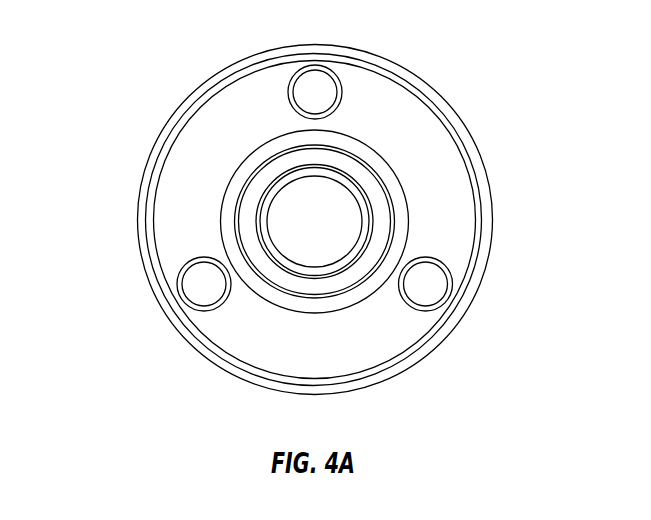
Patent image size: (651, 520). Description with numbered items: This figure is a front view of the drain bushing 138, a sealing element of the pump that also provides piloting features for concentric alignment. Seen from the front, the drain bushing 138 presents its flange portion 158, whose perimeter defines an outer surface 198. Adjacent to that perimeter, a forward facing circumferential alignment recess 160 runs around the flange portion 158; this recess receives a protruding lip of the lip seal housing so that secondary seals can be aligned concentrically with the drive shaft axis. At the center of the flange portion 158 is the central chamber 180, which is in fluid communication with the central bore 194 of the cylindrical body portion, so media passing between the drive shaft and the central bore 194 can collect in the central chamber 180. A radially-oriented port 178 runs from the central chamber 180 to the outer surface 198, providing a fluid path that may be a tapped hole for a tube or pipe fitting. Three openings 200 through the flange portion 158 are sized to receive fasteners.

The drain bushing 138 is at (112, 156).
The radially-oriented port 178 is at (484, 124).
The central chamber 180 is at (372, 178).
The central bore 194 is at (334, 232).
The outer surface 198 is at (492, 210).
The alignment recess 160 is at (473, 285).
The flange portion 158 is at (434, 372).
The openings 200 is at (196, 283).